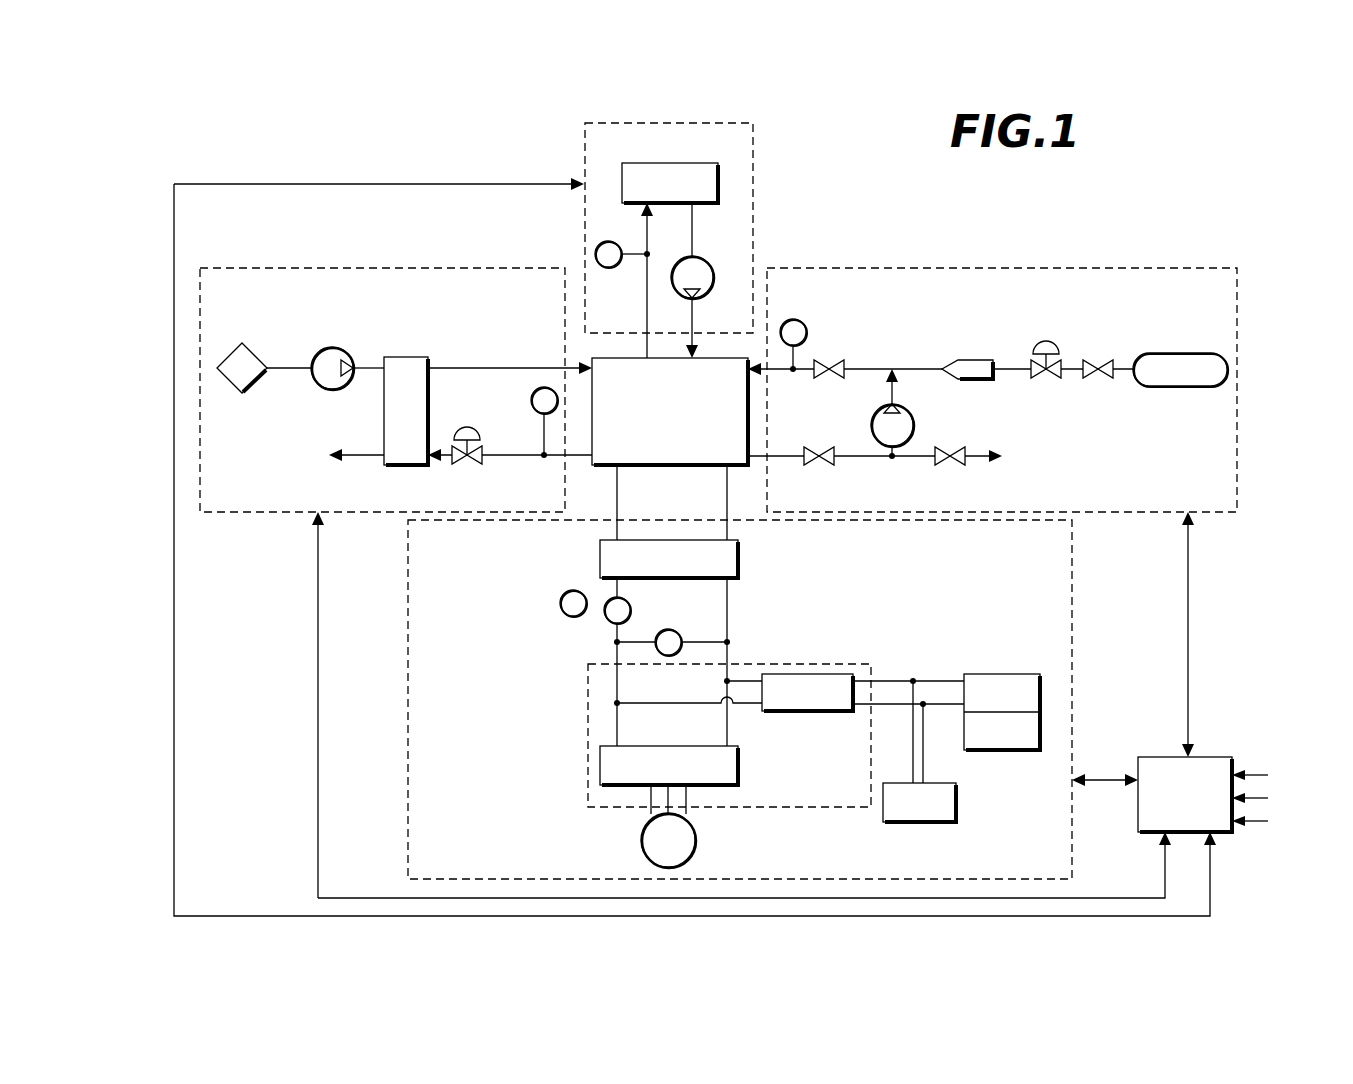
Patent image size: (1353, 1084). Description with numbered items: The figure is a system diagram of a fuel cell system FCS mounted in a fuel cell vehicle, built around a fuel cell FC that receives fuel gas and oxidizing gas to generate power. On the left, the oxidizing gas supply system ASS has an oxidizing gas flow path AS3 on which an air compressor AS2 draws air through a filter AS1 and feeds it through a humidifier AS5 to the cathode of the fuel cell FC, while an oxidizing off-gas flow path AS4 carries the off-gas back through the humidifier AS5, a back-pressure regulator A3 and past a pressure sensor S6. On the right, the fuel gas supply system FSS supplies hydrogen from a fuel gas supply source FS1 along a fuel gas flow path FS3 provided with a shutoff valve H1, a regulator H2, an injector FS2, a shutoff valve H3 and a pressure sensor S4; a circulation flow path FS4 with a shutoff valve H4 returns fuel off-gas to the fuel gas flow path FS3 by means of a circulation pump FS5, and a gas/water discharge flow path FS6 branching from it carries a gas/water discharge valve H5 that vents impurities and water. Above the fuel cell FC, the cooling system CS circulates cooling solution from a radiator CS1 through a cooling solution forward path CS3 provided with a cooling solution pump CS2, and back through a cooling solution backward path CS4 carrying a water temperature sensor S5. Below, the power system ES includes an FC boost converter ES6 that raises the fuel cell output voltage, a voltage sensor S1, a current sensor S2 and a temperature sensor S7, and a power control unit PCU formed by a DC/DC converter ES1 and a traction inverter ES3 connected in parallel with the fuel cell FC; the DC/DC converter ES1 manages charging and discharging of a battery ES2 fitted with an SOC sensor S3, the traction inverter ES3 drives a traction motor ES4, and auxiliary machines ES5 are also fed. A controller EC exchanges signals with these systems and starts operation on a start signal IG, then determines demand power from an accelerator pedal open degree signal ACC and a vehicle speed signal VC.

The oxidizing gas supply system ASS is at (365, 268).
The filter AS1 is at (250, 355).
The air compressor AS2 is at (332, 347).
The oxidizing gas flow path AS3 is at (440, 368).
The oxidizing off-gas flow path AS4 is at (515, 458).
The humidifier AS5 is at (410, 357).
The back-pressure regulator A3 is at (470, 428).
The pressure sensor S6 is at (532, 408).
The cooling system CS is at (755, 165).
The radiator CS1 is at (660, 163).
The cooling solution pump CS2 is at (712, 270).
The cooling solution forward path CS3 is at (695, 228).
The cooling solution backward path CS4 is at (645, 325).
The water temperature sensor S5 is at (597, 246).
The fuel cell FC is at (655, 468).
The fuel cell system FCS is at (1272, 217).
The fuel gas supply system FSS is at (1240, 330).
The fuel gas supply source FS1 is at (1178, 353).
The injector FS2 is at (968, 360).
The fuel gas flow path FS3 is at (868, 368).
The circulation flow path FS4 is at (855, 458).
The circulation pump FS5 is at (912, 425).
The gas/water discharge flow path FS6 is at (984, 454).
The shutoff valve H1 is at (1098, 360).
The regulator H2 is at (1046, 342).
The shutoff valve H3 is at (830, 360).
The shutoff valve H4 is at (820, 465).
The gas/water discharge valve H5 is at (950, 465).
The pressure sensor S4 is at (796, 320).
The power system ES is at (1072, 636).
The DC/DC converter ES1 is at (815, 674).
The battery ES2 is at (1000, 674).
The traction inverter ES3 is at (742, 770).
The traction motor ES4 is at (696, 848).
The auxiliary machines ES5 is at (920, 824).
The FC boost converter ES6 is at (742, 560).
The power control unit PCU is at (588, 716).
The voltage sensor S1 is at (680, 638).
The current sensor S2 is at (606, 620).
The SOC sensor S3 is at (1003, 752).
The temperature sensor S7 is at (560, 600).
The controller EC is at (1205, 757).
The start signal IG is at (1261, 775).
The vehicle speed signal VC is at (1264, 798).
The accelerator pedal open degree signal ACC is at (1270, 821).